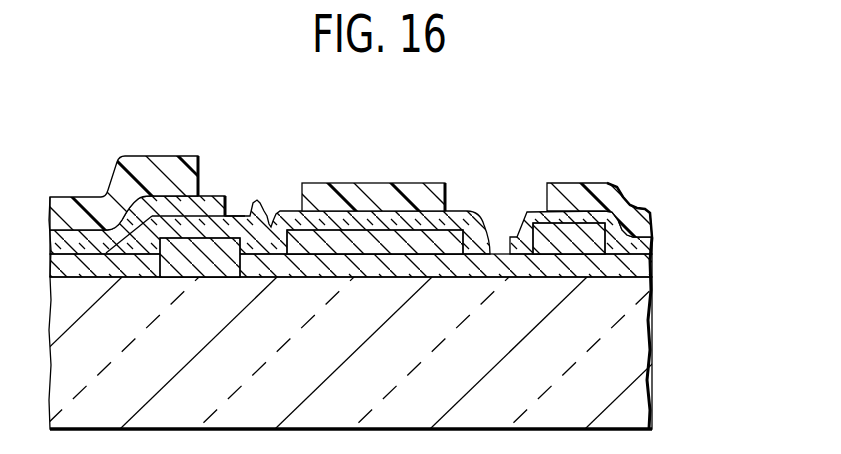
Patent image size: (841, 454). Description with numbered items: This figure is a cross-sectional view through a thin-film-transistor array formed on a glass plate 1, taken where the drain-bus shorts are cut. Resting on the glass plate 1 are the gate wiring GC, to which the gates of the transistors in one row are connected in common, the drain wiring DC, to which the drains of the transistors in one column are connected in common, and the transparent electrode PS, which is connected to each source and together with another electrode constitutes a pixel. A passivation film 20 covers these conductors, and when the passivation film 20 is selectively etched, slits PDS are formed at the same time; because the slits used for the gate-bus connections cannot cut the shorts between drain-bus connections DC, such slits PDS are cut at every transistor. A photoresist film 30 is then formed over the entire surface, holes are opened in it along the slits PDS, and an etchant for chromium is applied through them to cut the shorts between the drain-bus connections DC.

The glass plate 1 is at (632, 350).
The passivation film 20 is at (652, 244).
The photoresist film 30 is at (140, 173).
The gate wiring GC is at (183, 262).
The slit PDS is at (228, 215).
The transparent electrode PS is at (425, 242).
The drain wiring DC is at (577, 250).